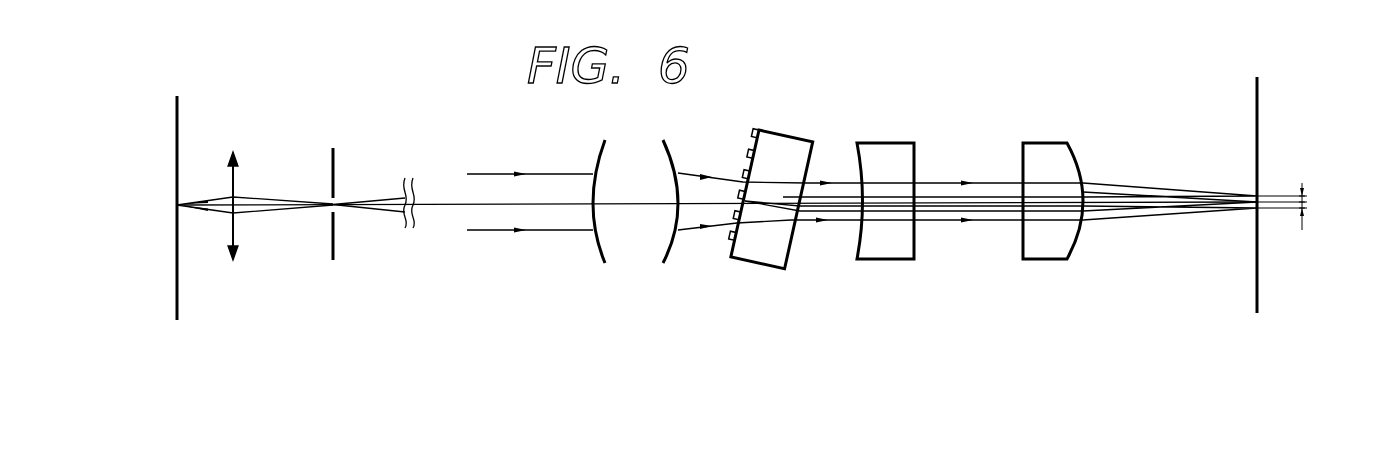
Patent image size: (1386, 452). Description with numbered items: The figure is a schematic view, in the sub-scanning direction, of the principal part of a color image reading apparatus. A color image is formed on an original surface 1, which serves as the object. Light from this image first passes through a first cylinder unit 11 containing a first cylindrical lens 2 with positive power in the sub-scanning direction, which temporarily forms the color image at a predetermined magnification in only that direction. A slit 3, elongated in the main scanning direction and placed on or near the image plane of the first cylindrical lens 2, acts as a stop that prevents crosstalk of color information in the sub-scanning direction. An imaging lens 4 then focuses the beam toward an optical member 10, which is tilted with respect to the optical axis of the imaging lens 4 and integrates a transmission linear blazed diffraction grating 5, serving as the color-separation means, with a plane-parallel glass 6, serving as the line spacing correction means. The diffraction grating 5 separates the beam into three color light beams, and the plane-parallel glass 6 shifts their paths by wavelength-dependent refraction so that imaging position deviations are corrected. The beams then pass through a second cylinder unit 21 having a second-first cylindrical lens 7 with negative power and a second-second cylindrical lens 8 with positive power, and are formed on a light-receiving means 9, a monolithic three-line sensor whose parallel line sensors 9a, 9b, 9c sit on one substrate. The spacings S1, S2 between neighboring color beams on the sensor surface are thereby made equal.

The original surface 1 is at (177, 293).
The first cylindrical lens 2 is at (233, 268).
The slit 3 is at (333, 250).
The imaging lens 4 is at (632, 260).
The transmission linear blazed diffraction grating 5 is at (733, 262).
The plane-parallel glass 6 is at (768, 270).
The second-first cylindrical lens 7 is at (895, 262).
The second-second cylindrical lens 8 is at (1048, 262).
The light-receiving means 9 is at (1260, 105).
The line sensor 9a is at (1258, 196).
The line sensor 9b is at (1255, 204).
The line sensor 9c is at (1259, 209).
The optical member 10 is at (792, 329).
The first cylinder unit 11 is at (263, 341).
The second cylinder unit 21 is at (1088, 332).
The spacing between neighboring color light beams S1 is at (1307, 199).
The spacing between neighboring color light beams S2 is at (1307, 205).